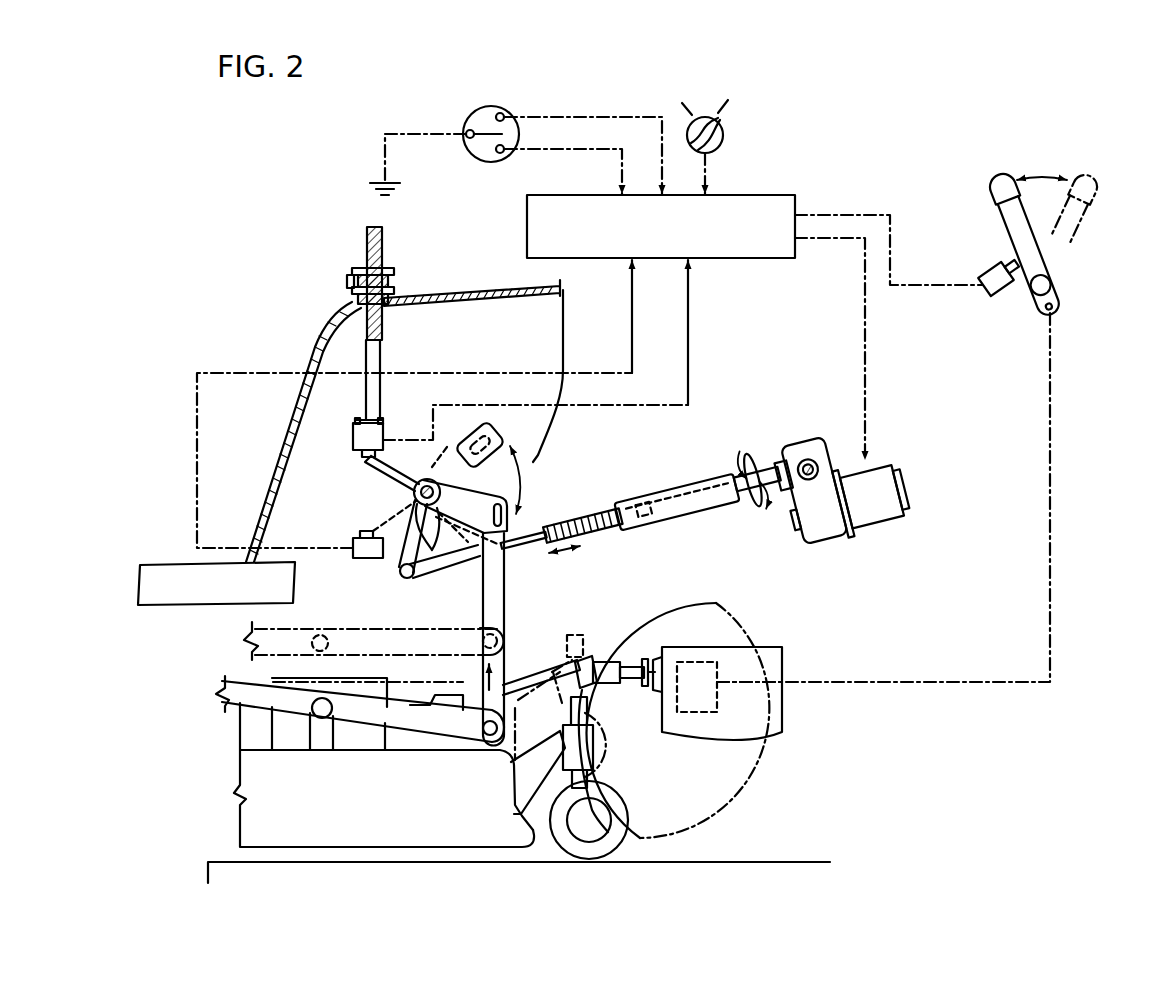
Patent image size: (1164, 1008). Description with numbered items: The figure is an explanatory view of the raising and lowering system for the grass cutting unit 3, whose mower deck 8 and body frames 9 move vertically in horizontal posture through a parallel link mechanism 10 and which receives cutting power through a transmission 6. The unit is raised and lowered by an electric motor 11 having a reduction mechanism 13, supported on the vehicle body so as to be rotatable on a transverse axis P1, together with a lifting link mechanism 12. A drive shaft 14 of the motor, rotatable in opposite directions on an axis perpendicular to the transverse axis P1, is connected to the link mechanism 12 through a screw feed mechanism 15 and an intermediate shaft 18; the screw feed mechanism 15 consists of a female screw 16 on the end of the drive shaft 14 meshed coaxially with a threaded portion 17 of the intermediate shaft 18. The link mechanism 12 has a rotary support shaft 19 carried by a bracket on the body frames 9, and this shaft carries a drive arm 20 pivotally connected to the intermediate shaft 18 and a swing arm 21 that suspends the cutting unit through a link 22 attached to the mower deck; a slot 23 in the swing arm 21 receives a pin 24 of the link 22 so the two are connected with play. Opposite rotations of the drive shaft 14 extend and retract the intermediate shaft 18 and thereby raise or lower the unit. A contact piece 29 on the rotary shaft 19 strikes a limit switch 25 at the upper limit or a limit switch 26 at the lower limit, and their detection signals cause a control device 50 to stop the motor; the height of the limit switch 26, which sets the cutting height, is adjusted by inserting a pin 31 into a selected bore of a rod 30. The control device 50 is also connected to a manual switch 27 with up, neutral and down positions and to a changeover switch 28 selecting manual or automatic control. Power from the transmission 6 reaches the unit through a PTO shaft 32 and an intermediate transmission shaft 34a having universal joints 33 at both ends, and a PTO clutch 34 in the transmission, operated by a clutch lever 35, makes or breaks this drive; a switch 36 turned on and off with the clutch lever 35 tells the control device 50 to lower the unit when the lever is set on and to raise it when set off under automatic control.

The grass cutting unit 3 is at (286, 852).
The transmission 6 is at (748, 722).
The mower deck 8 is at (485, 846).
The body frames 9 is at (172, 592).
The parallel link mechanism 10 is at (212, 670).
The electric motor 11 is at (885, 513).
The lifting link mechanism 12 is at (538, 468).
The reduction mechanism 13 is at (817, 540).
The drive shaft 14 is at (768, 478).
The screw feed mechanism 15 is at (641, 532).
The female screw 16 is at (680, 514).
The threaded portion 17 is at (607, 527).
The intermediate shaft 18 is at (514, 527).
The rotary support shaft 19 is at (425, 512).
The drive arm 20 is at (397, 578).
The swing arm 21 is at (508, 498).
The link 22 is at (505, 612).
The slot 23 is at (503, 503).
The pin 24 is at (523, 541).
The limit switch 25 is at (358, 553).
The limit switch 26 is at (386, 425).
The manual switch 27 is at (454, 124).
The changeover switch 28 is at (739, 146).
The contact piece 29 is at (370, 476).
The rod 30 is at (370, 350).
The pin 31 is at (349, 283).
The PTO shaft 32 is at (641, 684).
The universal joints 33 is at (617, 660).
The PTO clutch 34 is at (703, 714).
The intermediate transmission shaft 34a is at (546, 688).
The clutch lever 35 is at (997, 215).
The switch 36 is at (990, 270).
The control device 50 is at (726, 261).
The transverse axis P1 is at (810, 460).